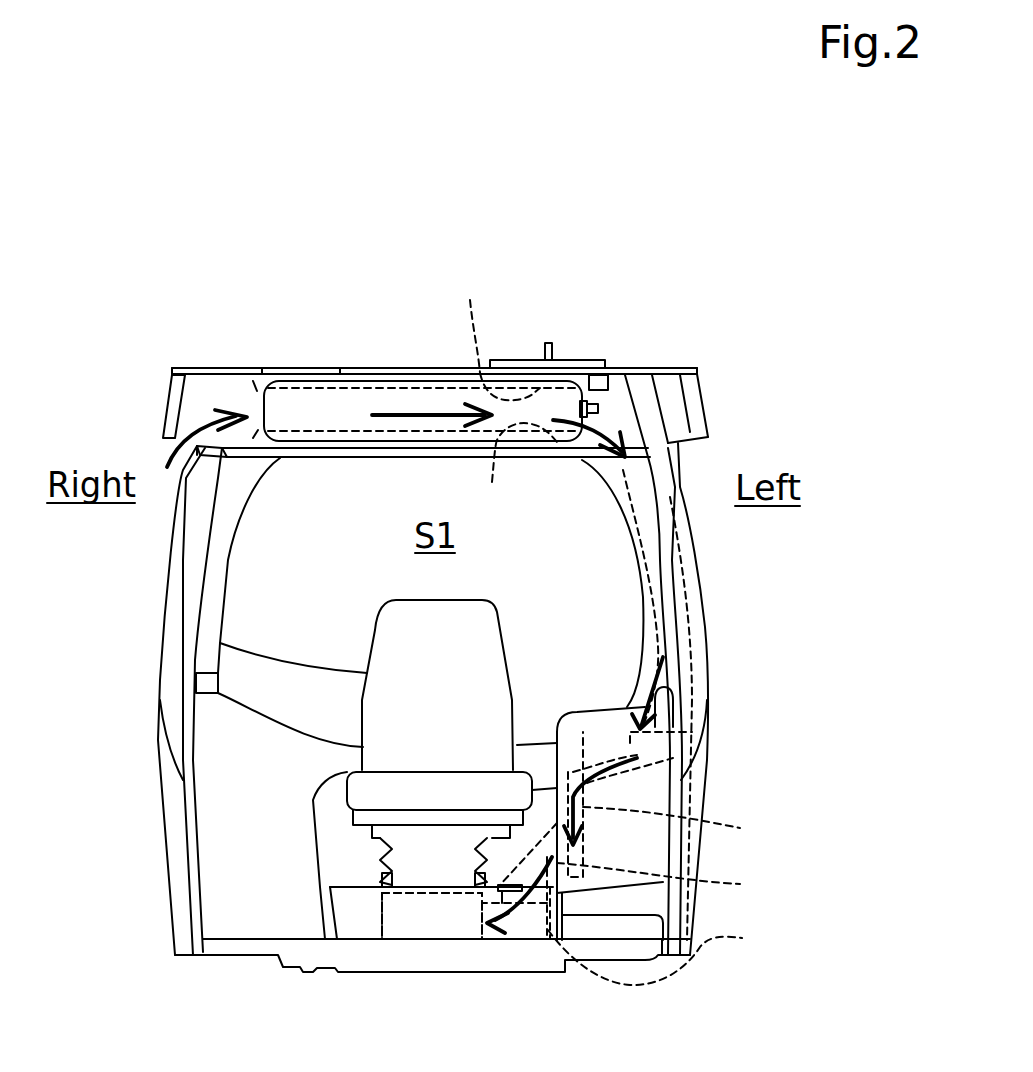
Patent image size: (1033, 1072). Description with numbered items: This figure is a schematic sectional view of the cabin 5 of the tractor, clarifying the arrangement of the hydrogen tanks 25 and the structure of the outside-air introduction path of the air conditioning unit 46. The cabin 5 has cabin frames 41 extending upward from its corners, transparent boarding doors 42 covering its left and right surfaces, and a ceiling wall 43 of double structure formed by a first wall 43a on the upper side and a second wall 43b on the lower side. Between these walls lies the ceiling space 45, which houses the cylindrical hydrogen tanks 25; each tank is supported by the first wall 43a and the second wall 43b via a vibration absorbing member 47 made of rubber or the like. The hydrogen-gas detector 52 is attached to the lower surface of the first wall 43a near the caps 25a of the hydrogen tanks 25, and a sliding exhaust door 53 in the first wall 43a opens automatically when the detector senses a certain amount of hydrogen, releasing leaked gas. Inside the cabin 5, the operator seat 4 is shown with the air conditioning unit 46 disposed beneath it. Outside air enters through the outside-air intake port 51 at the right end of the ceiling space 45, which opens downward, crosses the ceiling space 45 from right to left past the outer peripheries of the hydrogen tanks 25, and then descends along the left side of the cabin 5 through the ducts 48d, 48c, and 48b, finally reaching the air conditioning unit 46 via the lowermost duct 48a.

The cabin 5 is at (99, 387).
The operator seat 4 is at (480, 670).
The hydrogen tank 25 is at (417, 400).
The cap 25a is at (600, 410).
The cabin frame 41 is at (170, 703).
The boarding door 42 is at (195, 620).
The ceiling wall 43 is at (390, 235).
The first wall 43a is at (300, 366).
The second wall 43b is at (313, 453).
The ceiling space (guide passage) 45 is at (250, 397).
The air conditioning unit 46 is at (408, 939).
The vibration absorbing member 47 is at (504, 391).
The duct 48a is at (702, 953).
The duct 48b is at (706, 884).
The duct 48c is at (719, 828).
The duct 48d is at (690, 603).
The outside-air intake port 51 is at (192, 450).
The hydrogen-gas detector 52 is at (598, 386).
The exhaust door 53 is at (535, 360).